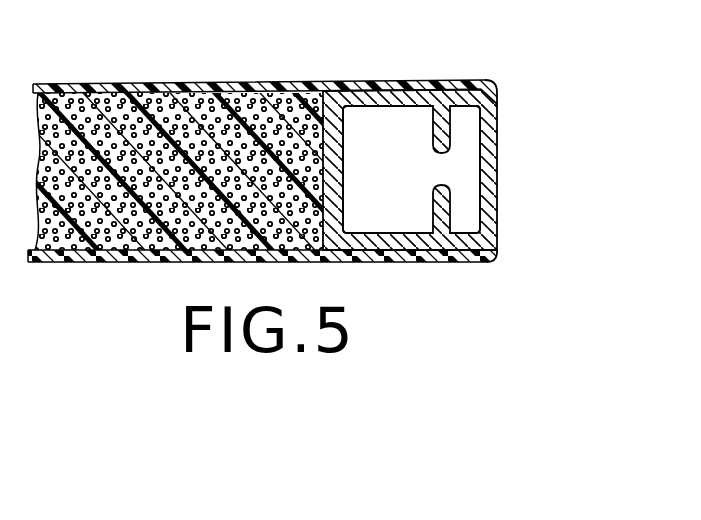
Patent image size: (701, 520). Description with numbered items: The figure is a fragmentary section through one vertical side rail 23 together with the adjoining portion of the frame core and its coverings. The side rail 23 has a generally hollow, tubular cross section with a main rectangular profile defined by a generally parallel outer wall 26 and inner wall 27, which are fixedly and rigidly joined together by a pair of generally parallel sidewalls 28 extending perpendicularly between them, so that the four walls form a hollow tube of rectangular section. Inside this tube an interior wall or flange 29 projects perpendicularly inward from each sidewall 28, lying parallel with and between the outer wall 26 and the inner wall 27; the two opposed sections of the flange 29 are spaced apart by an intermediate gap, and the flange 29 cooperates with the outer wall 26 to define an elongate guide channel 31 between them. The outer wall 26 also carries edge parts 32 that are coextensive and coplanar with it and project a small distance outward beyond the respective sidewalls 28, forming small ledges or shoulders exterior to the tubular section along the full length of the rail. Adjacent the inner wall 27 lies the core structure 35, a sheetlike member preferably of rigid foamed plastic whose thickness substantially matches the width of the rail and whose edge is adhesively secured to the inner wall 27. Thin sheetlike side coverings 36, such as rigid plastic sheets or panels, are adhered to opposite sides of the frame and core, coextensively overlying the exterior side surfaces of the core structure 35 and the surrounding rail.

The vertical side rail 23 is at (498, 123).
The outer wall 26 is at (493, 203).
The inner wall 27 is at (327, 133).
The sidewall 28 is at (386, 100).
The interior wall or flange 29 is at (441, 128).
The guide channel 31 is at (463, 160).
The edge part 32 is at (489, 82).
The core structure 35 is at (186, 84).
The side covering 36 is at (99, 84).